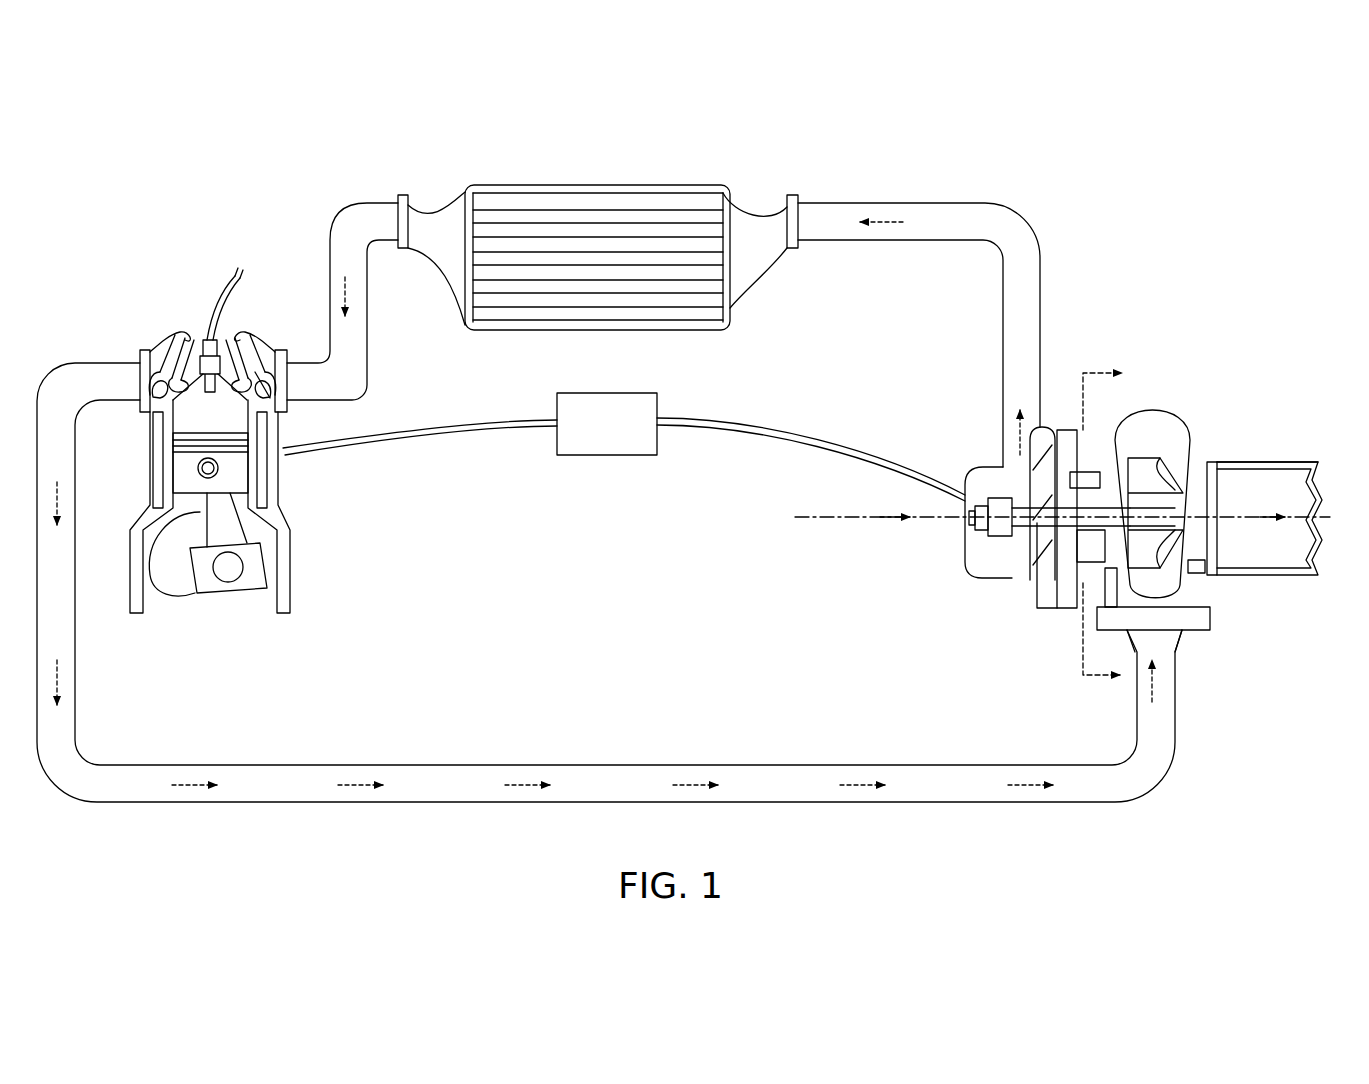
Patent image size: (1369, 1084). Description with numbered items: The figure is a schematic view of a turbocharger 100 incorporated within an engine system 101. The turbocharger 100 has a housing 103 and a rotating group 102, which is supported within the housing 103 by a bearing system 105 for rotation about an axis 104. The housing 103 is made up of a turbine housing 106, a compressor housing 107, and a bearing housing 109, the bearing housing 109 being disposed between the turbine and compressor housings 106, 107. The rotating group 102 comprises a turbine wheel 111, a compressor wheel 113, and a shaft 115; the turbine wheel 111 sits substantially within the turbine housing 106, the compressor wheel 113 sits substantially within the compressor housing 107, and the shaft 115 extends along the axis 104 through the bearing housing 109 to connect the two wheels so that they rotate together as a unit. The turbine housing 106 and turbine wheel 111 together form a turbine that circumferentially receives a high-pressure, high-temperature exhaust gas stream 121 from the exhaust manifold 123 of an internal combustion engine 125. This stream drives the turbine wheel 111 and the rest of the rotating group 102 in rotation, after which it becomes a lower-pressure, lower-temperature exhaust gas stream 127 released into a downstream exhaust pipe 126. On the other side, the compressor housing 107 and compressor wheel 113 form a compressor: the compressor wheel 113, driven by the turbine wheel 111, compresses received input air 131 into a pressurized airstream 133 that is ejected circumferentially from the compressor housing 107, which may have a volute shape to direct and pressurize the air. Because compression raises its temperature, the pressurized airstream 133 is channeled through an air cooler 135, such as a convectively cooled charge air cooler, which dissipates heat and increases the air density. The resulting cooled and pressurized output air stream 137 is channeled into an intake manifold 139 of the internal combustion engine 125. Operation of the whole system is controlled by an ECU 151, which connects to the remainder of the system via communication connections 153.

The turbocharger 100 is at (1155, 341).
The engine system 101 is at (183, 183).
The rotating group 102 is at (1066, 522).
The housing 103 is at (1065, 425).
The axis 104 is at (1330, 515).
The bearing system 105 is at (1092, 522).
The turbine housing 106 is at (1178, 442).
The compressor housing 107 is at (1012, 560).
The bearing housing 109 is at (1092, 462).
The turbine wheel 111 is at (1168, 505).
The compressor wheel 113 is at (1000, 555).
The shaft 115 is at (1107, 507).
The exhaust gas stream 121 is at (690, 783).
The exhaust manifold 123 is at (160, 352).
The internal combustion engine 125 is at (240, 483).
The exhaust pipe 126 is at (1268, 460).
The lower-pressure and lower-temperature exhaust gas stream 127 is at (1253, 519).
The input air 131 is at (877, 521).
The pressurized airstream 133 is at (1003, 446).
The air cooler 135 is at (598, 208).
The output air stream 137 is at (345, 288).
The intake manifold 139 is at (280, 398).
The ECU 151 is at (605, 456).
The communication connections 153 is at (745, 438).